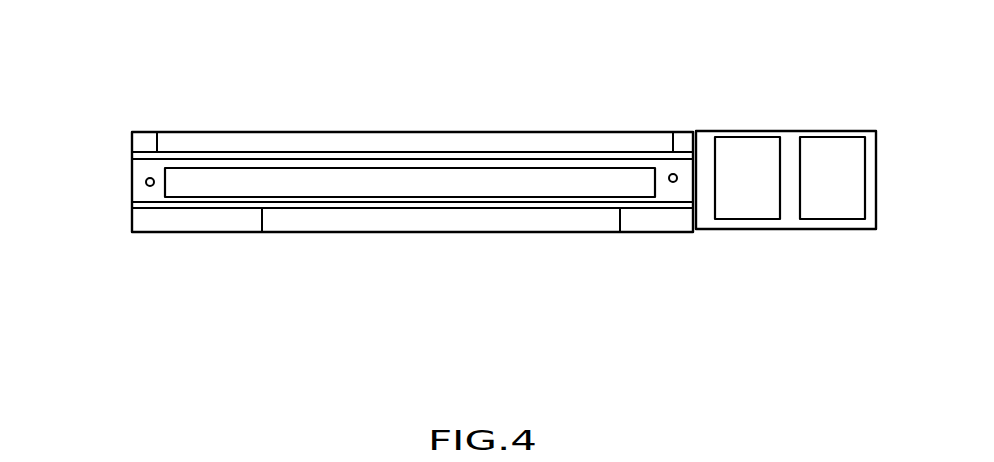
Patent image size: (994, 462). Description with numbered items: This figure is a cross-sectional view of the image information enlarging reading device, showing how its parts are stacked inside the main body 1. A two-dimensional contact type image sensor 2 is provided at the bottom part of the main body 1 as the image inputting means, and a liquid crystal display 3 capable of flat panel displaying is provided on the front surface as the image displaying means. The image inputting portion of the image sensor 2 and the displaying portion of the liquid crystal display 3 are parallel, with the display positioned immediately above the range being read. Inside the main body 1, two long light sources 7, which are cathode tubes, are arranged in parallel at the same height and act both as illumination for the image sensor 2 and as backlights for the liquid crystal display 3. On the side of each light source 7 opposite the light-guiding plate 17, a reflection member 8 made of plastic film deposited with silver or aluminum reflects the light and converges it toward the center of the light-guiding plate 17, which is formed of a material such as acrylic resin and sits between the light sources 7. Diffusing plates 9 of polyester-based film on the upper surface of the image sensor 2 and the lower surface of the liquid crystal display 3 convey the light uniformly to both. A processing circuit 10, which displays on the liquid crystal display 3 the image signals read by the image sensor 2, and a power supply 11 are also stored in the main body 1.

The main body 1 is at (739, 130).
The two-dimensional contact type image sensor 2 is at (448, 222).
The liquid crystal display 3 is at (410, 138).
The light source 7 is at (148, 173).
The reflection member 8 is at (150, 189).
The diffusing plate 9 is at (239, 152).
The processing circuit 10 is at (742, 210).
The power supply 11 is at (828, 207).
The light-guiding plate 17 is at (559, 168).